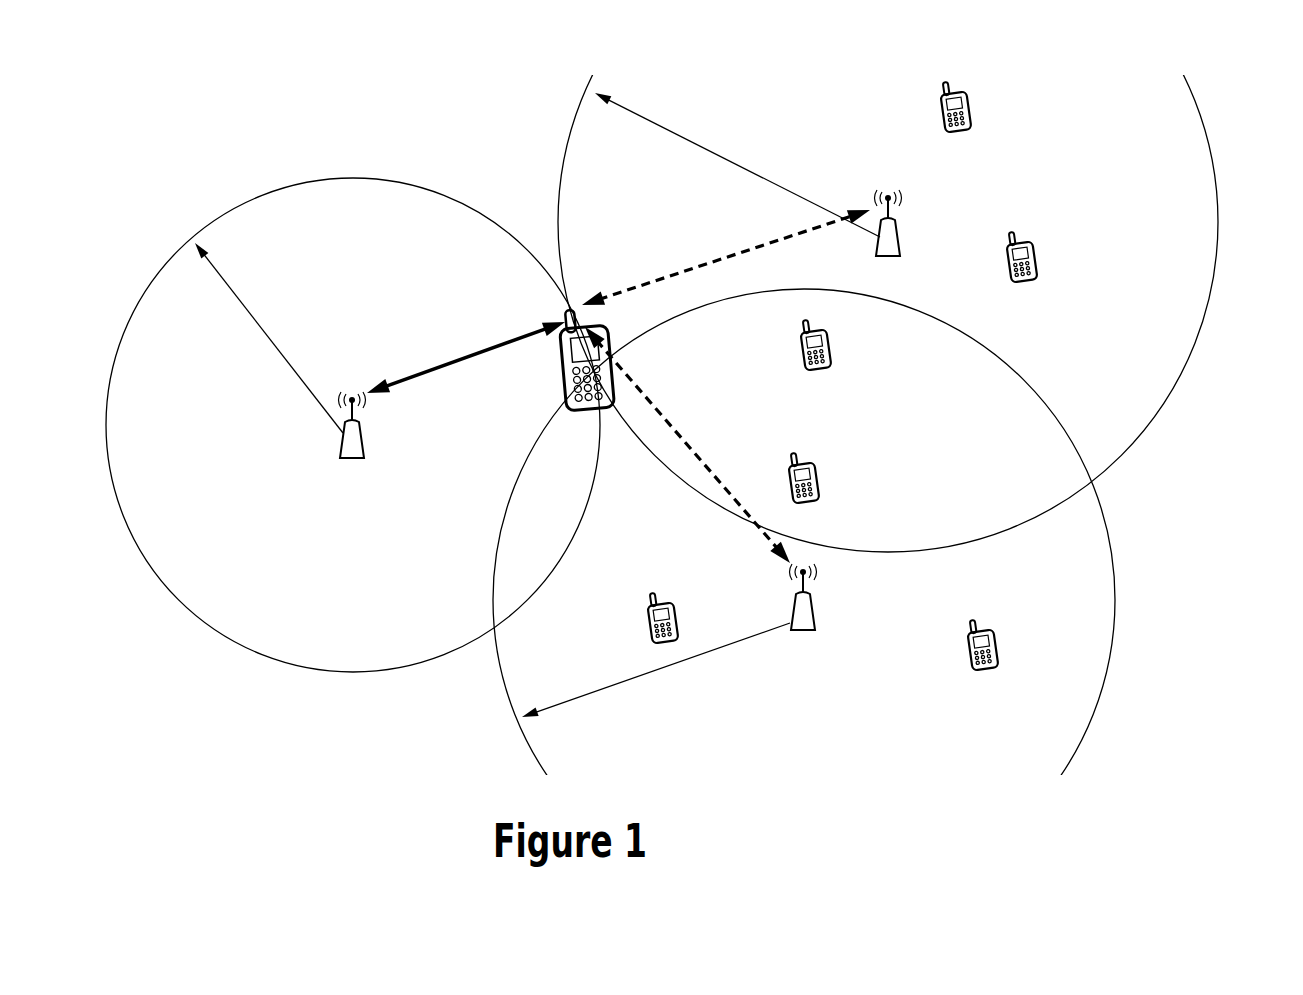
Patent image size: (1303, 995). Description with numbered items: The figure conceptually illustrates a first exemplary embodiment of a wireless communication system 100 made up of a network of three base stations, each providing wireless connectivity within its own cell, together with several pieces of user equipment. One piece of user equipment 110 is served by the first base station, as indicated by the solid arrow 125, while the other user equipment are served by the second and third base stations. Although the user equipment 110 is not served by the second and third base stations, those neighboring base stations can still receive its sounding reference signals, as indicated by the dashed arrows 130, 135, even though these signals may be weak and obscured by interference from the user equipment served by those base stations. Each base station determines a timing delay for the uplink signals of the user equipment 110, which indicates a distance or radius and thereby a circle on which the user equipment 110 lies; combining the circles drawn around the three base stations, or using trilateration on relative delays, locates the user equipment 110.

The wireless communication system 100 is at (223, 107).
The user equipment 110 is at (562, 368).
The arrow 125 is at (452, 360).
The dashed arrow 130 is at (692, 447).
The dashed arrow 135 is at (707, 260).